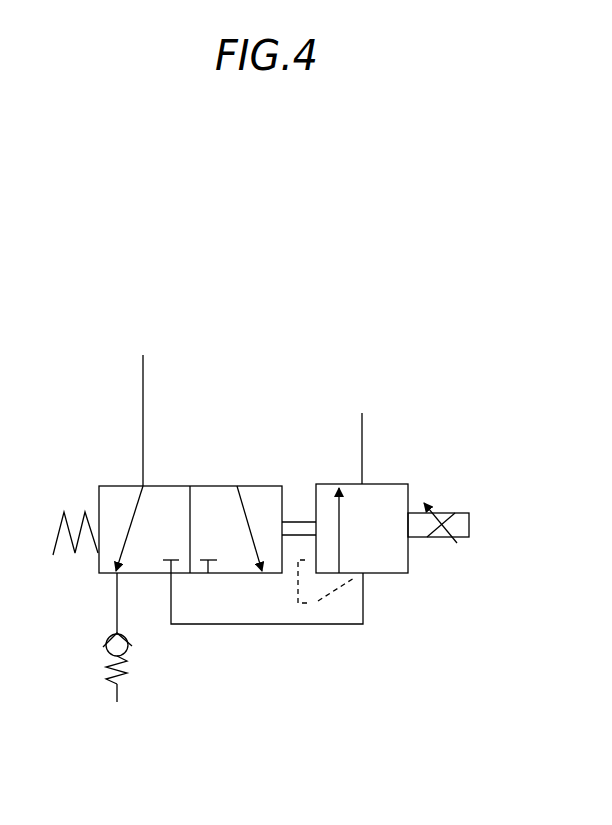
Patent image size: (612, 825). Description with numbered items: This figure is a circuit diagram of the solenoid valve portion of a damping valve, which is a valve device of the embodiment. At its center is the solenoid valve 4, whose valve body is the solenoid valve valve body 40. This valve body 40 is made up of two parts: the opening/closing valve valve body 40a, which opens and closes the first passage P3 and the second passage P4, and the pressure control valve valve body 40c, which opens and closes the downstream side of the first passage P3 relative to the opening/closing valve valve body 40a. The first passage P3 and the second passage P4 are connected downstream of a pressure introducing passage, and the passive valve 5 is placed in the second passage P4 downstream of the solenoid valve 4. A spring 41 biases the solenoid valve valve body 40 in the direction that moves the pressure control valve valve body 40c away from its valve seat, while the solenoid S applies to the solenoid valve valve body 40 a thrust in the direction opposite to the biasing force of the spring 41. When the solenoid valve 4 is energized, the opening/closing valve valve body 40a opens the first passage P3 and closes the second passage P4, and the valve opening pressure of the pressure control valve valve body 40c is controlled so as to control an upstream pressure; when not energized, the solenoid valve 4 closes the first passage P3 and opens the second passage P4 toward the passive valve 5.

The solenoid valve 4 is at (420, 630).
The solenoid valve valve body 40 is at (255, 480).
The opening/closing valve valve body 40a is at (115, 483).
The pressure control valve valve body 40c is at (393, 482).
The spring 41 is at (72, 540).
The passive valve 5 is at (104, 651).
The first passage P3 is at (277, 625).
The second passage P4 is at (120, 688).
The solenoid S is at (466, 537).